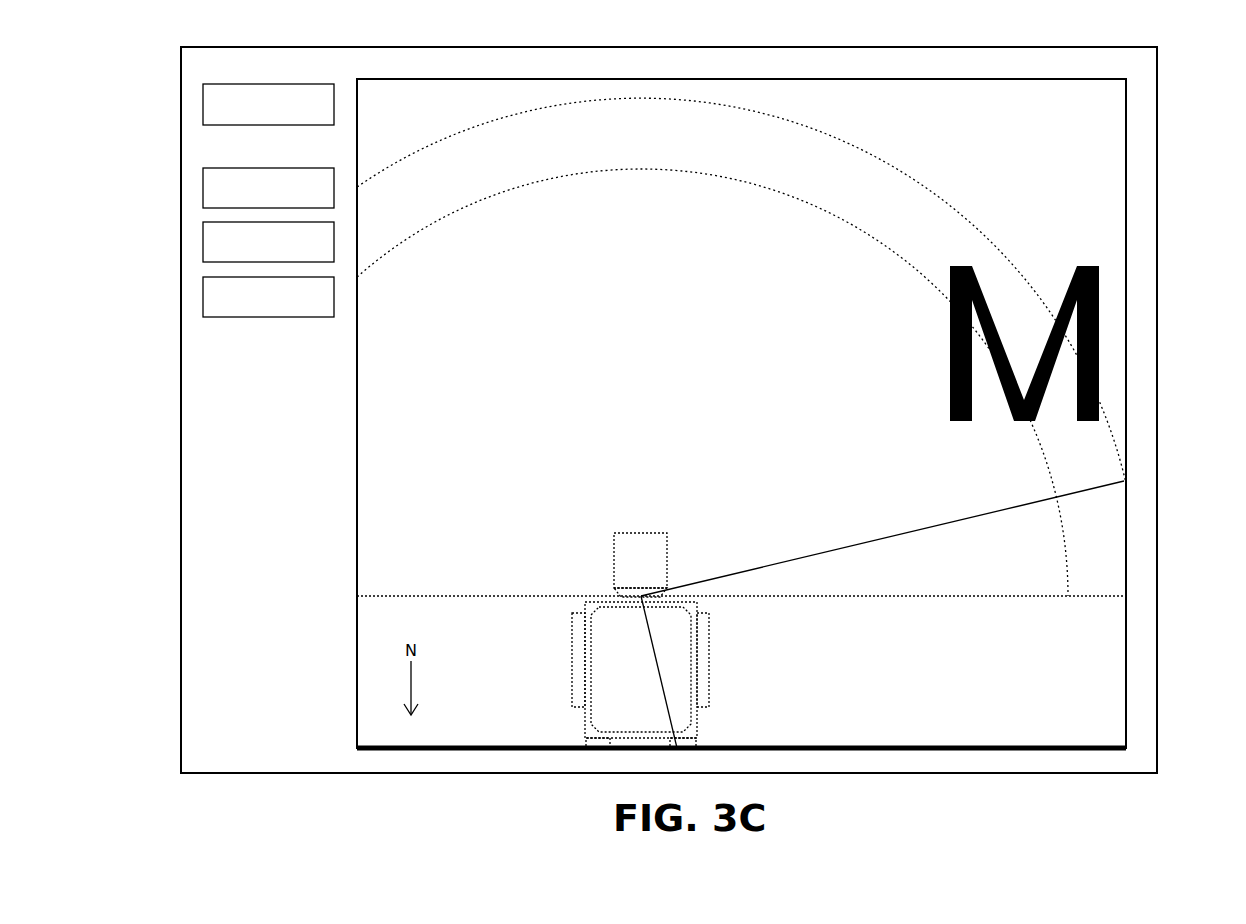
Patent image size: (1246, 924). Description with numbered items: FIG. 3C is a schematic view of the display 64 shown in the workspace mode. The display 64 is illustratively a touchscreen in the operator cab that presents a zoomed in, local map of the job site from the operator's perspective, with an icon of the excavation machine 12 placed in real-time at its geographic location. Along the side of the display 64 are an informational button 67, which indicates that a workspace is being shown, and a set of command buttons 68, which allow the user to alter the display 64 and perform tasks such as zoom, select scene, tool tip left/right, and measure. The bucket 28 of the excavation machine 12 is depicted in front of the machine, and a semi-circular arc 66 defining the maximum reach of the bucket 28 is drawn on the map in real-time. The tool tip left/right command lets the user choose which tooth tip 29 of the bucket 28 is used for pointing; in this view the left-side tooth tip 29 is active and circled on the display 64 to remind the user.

The excavation machine 12 is at (733, 662).
The bucket 28 is at (630, 552).
The tooth tip 29 is at (613, 597).
The display 64 is at (1157, 335).
The semi-circular arc 66 is at (521, 186).
The informational buttons 67 is at (203, 104).
The command buttons 68 is at (203, 243).